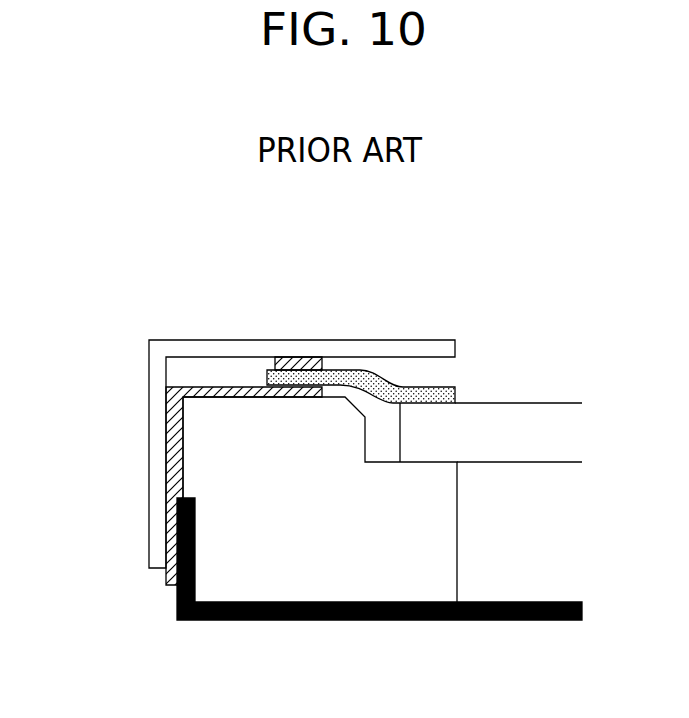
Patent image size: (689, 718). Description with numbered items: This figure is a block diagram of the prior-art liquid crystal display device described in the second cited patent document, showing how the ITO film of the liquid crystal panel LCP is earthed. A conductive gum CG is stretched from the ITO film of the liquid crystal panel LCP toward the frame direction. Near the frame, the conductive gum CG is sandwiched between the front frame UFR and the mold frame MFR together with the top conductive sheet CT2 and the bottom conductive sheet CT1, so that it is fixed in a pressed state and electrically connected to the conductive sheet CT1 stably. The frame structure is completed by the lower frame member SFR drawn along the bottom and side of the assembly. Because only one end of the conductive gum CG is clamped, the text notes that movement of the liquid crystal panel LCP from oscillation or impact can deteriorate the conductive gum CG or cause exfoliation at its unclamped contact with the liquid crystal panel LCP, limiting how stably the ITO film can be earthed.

The front frame UFR is at (365, 350).
The mold frame MFR is at (252, 568).
The liquid crystal panel LCP is at (535, 425).
The conductive sheet CT1 is at (172, 455).
The conductive sheet CT2 is at (287, 363).
The conductive gum CG is at (448, 386).
The side frame SFR is at (392, 620).